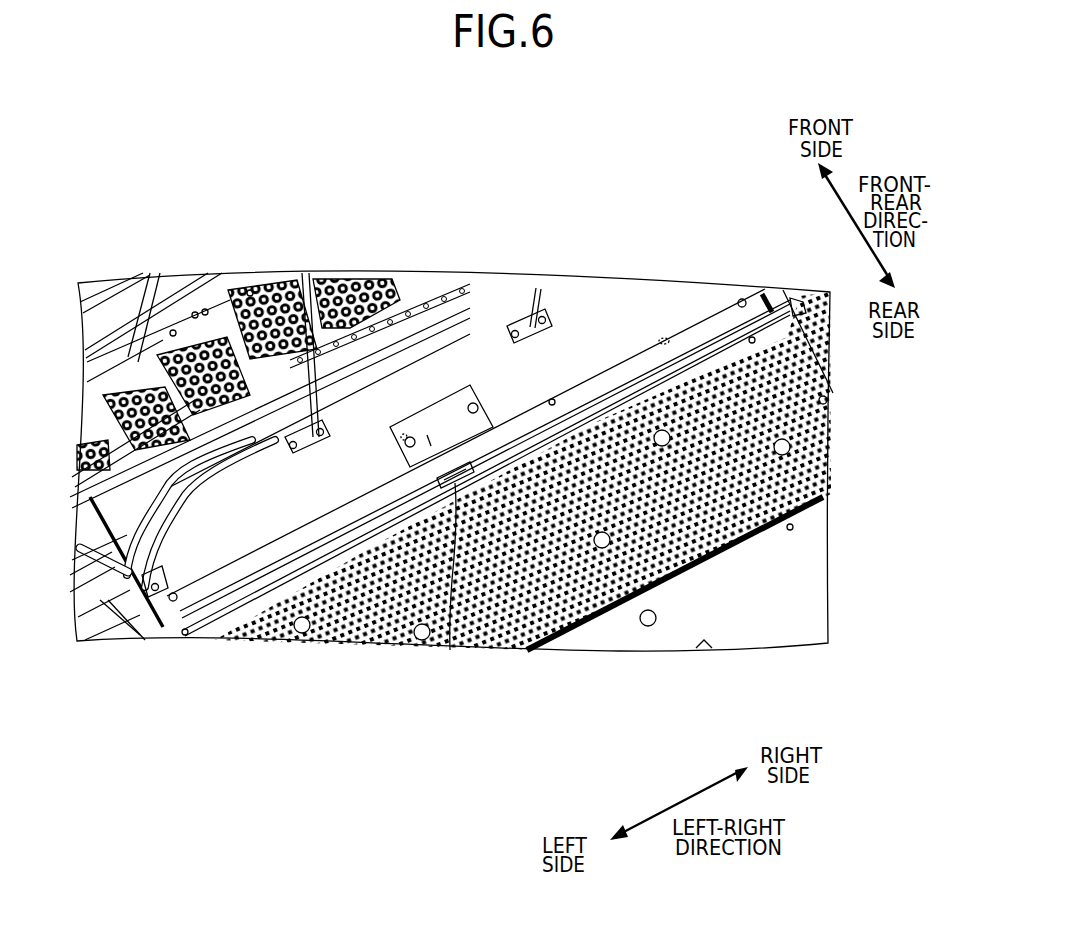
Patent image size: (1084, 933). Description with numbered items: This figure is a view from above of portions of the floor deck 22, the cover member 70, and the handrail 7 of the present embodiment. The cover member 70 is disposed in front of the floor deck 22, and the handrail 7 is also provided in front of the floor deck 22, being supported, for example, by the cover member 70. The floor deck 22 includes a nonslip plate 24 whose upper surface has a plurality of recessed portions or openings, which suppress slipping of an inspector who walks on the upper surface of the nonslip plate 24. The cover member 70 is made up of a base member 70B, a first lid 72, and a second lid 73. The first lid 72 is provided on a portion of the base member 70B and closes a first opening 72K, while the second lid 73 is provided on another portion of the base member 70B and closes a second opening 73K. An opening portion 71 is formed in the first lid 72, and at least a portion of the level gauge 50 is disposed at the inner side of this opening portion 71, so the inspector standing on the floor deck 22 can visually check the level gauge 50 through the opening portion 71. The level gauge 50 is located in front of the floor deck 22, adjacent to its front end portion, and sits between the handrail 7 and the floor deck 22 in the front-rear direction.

The handrail 7 is at (410, 296).
The floor deck 22 is at (796, 584).
The nonslip plate 24 is at (746, 520).
The level gauge 50 is at (450, 650).
The cover member 70 is at (486, 425).
The base member 70B is at (572, 310).
The opening portion 71 is at (473, 474).
The first lid 72 is at (493, 432).
The first opening 72K is at (678, 286).
The second lid 73 is at (403, 423).
The second opening 73K is at (400, 437).